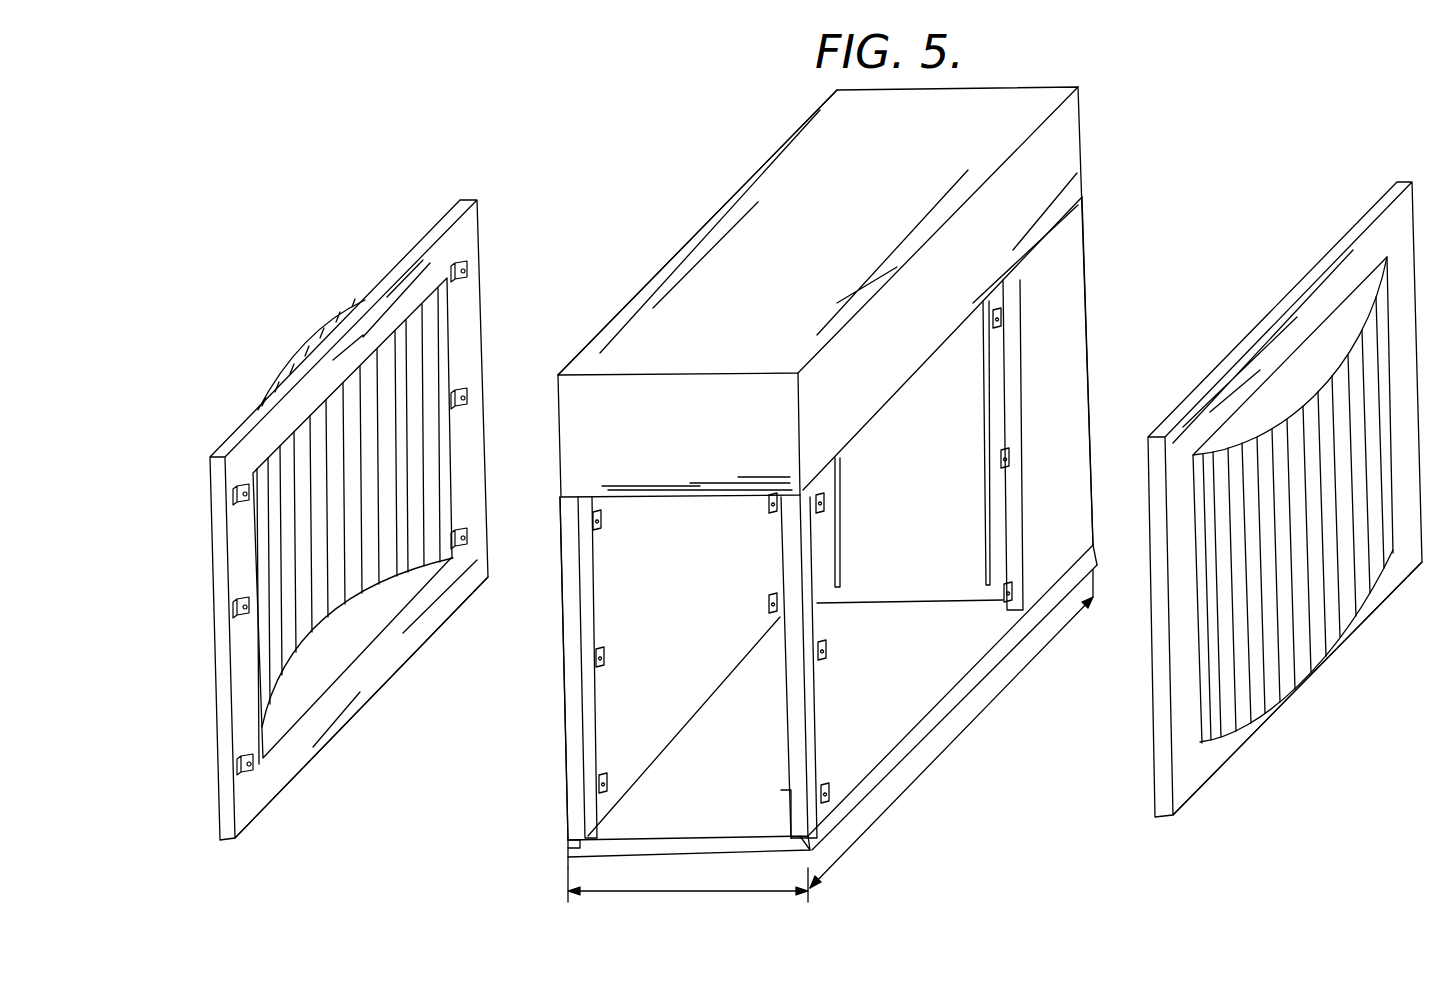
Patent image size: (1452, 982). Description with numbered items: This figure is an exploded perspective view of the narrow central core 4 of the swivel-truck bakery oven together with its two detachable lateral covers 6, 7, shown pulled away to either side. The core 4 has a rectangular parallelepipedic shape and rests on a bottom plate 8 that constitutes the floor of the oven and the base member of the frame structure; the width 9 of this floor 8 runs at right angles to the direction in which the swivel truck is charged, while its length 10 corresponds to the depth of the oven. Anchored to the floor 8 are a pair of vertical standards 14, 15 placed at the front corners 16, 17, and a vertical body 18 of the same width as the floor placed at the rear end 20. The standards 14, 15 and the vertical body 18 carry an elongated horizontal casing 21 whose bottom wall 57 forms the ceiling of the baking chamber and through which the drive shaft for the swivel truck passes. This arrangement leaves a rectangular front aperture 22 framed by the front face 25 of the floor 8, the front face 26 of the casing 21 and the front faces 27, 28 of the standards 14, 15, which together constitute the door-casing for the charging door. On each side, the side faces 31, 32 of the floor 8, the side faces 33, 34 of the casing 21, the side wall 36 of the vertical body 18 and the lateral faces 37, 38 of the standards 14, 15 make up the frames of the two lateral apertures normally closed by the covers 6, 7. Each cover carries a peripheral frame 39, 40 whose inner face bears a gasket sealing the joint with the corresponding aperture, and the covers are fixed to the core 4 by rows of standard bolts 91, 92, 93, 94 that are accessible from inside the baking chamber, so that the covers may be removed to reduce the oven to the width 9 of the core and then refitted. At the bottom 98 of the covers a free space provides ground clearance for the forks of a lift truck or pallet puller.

The central core 4 is at (963, 402).
The detachable lateral cover 6 is at (207, 559).
The detachable lateral cover 7 is at (1421, 389).
The bottom plate 8 is at (670, 748).
The width 9 is at (688, 885).
The length 10 is at (951, 729).
The vertical standard 14 is at (590, 810).
The vertical standard 15 is at (790, 795).
The front corner 16 is at (565, 862).
The front corner 17 is at (813, 852).
The vertical body 18 is at (1090, 305).
The rear end 20 is at (1092, 542).
The elongated horizontal casing 21 is at (668, 272).
The rectangular front aperture 22 is at (605, 553).
The front face 25 is at (716, 848).
The front face 26 is at (571, 420).
The front face 27 is at (568, 665).
The front face 28 is at (805, 737).
The side face 31 is at (570, 850).
The side face 32 is at (845, 810).
The side face 33 is at (622, 315).
The side face 34 is at (1060, 177).
The side wall 36 is at (1080, 383).
The lateral face 37 is at (568, 702).
The lateral face 38 is at (812, 628).
The peripheral frame 39 is at (270, 785).
The peripheral frame 40 is at (1224, 758).
The bottom wall 57 is at (1050, 245).
The standard bolt 91 is at (590, 530).
The standard bolt 92 is at (598, 648).
The standard bolt 93 is at (828, 502).
The standard bolt 94 is at (828, 656).
The bottom 98 is at (1326, 658).